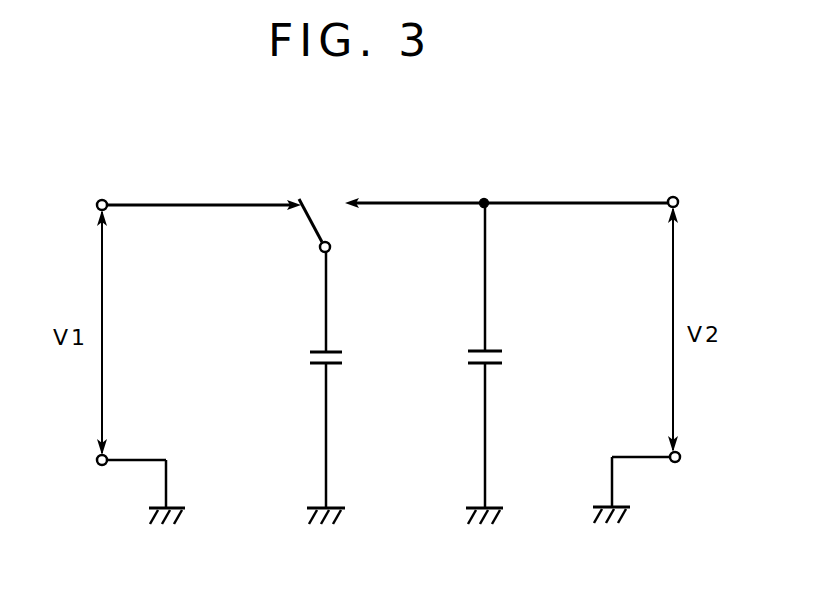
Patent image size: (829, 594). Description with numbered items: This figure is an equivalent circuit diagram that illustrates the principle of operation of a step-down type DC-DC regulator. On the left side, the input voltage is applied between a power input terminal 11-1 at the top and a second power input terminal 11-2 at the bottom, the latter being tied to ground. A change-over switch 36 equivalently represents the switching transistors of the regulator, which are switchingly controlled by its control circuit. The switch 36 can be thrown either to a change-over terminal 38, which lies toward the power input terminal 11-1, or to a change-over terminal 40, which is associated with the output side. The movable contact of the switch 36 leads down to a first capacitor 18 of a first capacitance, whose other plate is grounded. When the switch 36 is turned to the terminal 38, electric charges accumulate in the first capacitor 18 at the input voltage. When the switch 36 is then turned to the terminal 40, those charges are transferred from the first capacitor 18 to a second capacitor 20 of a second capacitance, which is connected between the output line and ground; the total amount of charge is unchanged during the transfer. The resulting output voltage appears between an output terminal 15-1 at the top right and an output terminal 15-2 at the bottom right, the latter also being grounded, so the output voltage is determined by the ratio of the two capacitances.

The power input terminal 11-1 is at (102, 199).
The power input terminal 11-2 is at (102, 466).
The output terminal 15-1 is at (676, 194).
The output terminal 15-2 is at (675, 463).
The change-over switch 36 is at (326, 207).
The change-over terminal 38 is at (296, 212).
The change-over terminal 40 is at (360, 210).
The first capacitor 18 is at (304, 358).
The second capacitor 20 is at (500, 358).